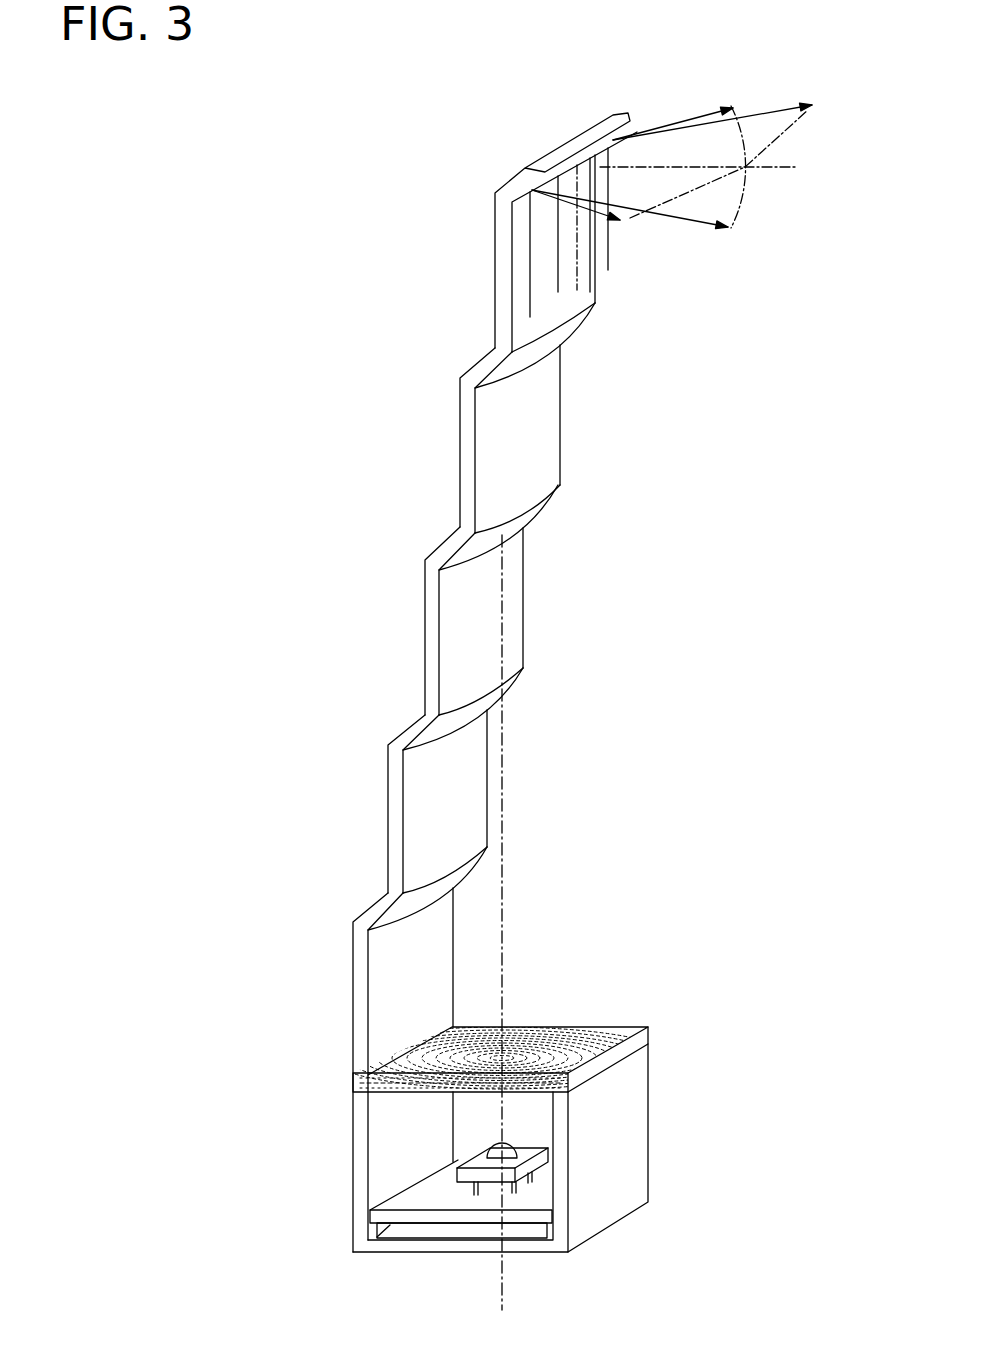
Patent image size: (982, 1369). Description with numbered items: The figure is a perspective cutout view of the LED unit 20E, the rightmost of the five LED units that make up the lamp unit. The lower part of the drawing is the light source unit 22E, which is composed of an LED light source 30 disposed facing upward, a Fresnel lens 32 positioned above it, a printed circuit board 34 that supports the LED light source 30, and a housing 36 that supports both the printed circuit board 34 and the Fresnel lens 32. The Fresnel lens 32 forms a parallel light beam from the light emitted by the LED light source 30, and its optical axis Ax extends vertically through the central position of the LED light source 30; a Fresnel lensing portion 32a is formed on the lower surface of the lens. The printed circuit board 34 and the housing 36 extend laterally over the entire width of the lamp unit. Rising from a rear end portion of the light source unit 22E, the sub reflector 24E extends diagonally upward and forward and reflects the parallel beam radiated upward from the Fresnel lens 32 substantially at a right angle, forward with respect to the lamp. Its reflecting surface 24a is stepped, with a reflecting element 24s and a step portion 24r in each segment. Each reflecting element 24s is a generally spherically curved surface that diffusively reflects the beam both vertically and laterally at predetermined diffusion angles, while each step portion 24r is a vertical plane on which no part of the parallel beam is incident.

The LED unit 20E is at (318, 338).
The sub reflector 24E is at (423, 652).
The reflecting surface 24a is at (533, 440).
The reflecting element 24s is at (613, 145).
The step portion 24r is at (510, 600).
The optical axis Ax is at (503, 925).
The light source unit 22E is at (352, 1135).
The LED light source 30 is at (497, 1143).
The Fresnel lens 32 is at (597, 1033).
The Fresnel lensing portion 32a is at (405, 1098).
The printed circuit board 34 is at (410, 1197).
The housing 36 is at (620, 1142).